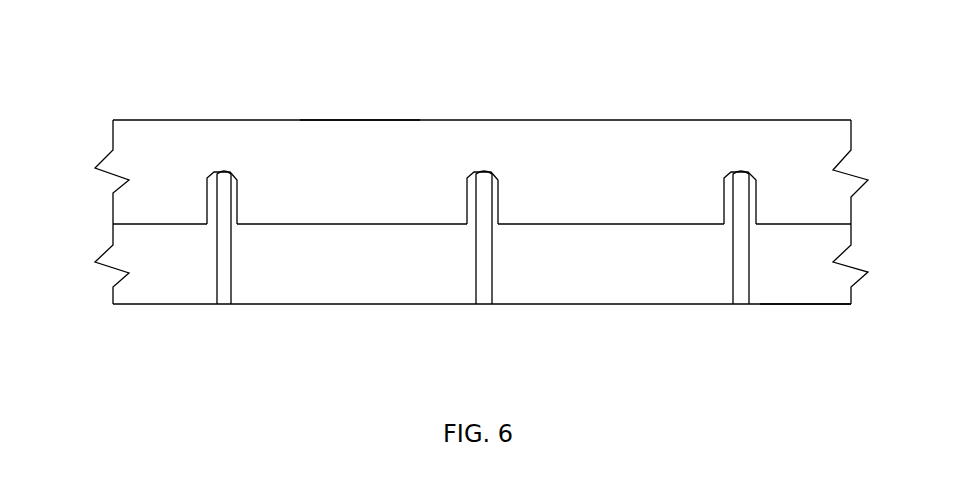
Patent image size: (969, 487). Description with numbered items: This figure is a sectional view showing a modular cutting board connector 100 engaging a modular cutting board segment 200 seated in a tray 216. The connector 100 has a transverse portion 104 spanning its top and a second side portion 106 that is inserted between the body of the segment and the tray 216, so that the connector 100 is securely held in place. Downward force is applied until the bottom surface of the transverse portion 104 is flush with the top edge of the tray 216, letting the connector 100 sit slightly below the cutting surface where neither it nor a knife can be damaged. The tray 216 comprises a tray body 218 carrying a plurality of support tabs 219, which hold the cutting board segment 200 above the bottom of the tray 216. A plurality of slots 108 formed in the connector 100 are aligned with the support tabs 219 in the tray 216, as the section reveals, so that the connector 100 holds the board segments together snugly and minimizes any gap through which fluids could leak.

The modular cutting board connector 100 is at (763, 120).
The transverse portion 104 is at (250, 120).
The second side portion 106 is at (353, 158).
The slots 108 is at (203, 190).
The cutting board segment 200 is at (825, 304).
The tray 216 is at (118, 304).
The tray body 218 is at (160, 304).
The support tabs 219 is at (222, 295).